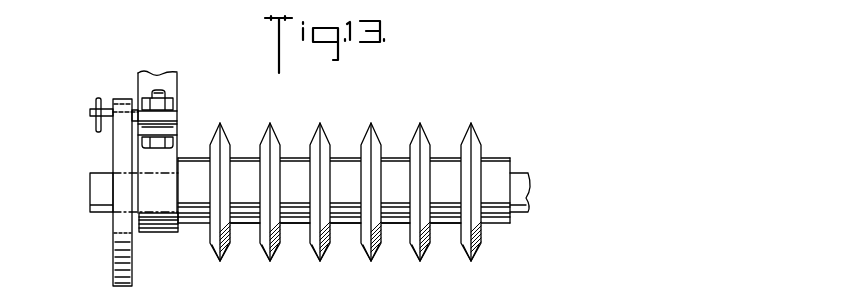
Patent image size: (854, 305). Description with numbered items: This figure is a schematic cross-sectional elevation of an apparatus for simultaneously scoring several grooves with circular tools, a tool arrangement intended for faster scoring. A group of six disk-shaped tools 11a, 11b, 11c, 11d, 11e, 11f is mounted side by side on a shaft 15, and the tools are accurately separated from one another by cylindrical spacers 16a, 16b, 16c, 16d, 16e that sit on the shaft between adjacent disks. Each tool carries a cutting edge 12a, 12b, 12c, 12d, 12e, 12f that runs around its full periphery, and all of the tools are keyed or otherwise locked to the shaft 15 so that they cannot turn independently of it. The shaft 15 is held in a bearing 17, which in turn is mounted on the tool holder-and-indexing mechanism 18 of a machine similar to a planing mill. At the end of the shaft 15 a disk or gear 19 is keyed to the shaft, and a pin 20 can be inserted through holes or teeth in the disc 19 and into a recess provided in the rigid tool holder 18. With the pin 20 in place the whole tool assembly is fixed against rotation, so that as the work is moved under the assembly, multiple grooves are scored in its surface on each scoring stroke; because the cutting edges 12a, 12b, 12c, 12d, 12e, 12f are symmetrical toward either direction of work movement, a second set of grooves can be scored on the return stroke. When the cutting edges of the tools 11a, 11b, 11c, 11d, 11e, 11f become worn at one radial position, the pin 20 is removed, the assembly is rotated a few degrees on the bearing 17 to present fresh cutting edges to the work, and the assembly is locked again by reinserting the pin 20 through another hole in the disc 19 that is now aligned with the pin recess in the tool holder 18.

The tool 11a is at (475, 130).
The tool 11b is at (424, 130).
The tool 11c is at (375, 130).
The tool 11d is at (324, 130).
The tool 11e is at (274, 130).
The tool 11f is at (224, 130).
The cutting edge 12a is at (471, 262).
The cutting edge 12b is at (420, 262).
The cutting edge 12c is at (371, 262).
The cutting edge 12d is at (320, 262).
The cutting edge 12e is at (270, 262).
The cutting edge 12f is at (220, 262).
The shaft 15 is at (522, 172).
The cylindrical spacer 16a is at (447, 226).
The cylindrical spacer 16b is at (398, 226).
The cylindrical spacer 16c is at (347, 226).
The cylindrical spacer 16d is at (297, 226).
The cylindrical spacer 16e is at (247, 226).
The bearing 17 is at (161, 232).
The tool holder-and-indexing mechanism 18 is at (178, 84).
The disk or gear 19 is at (114, 247).
The pin 20 is at (90, 112).